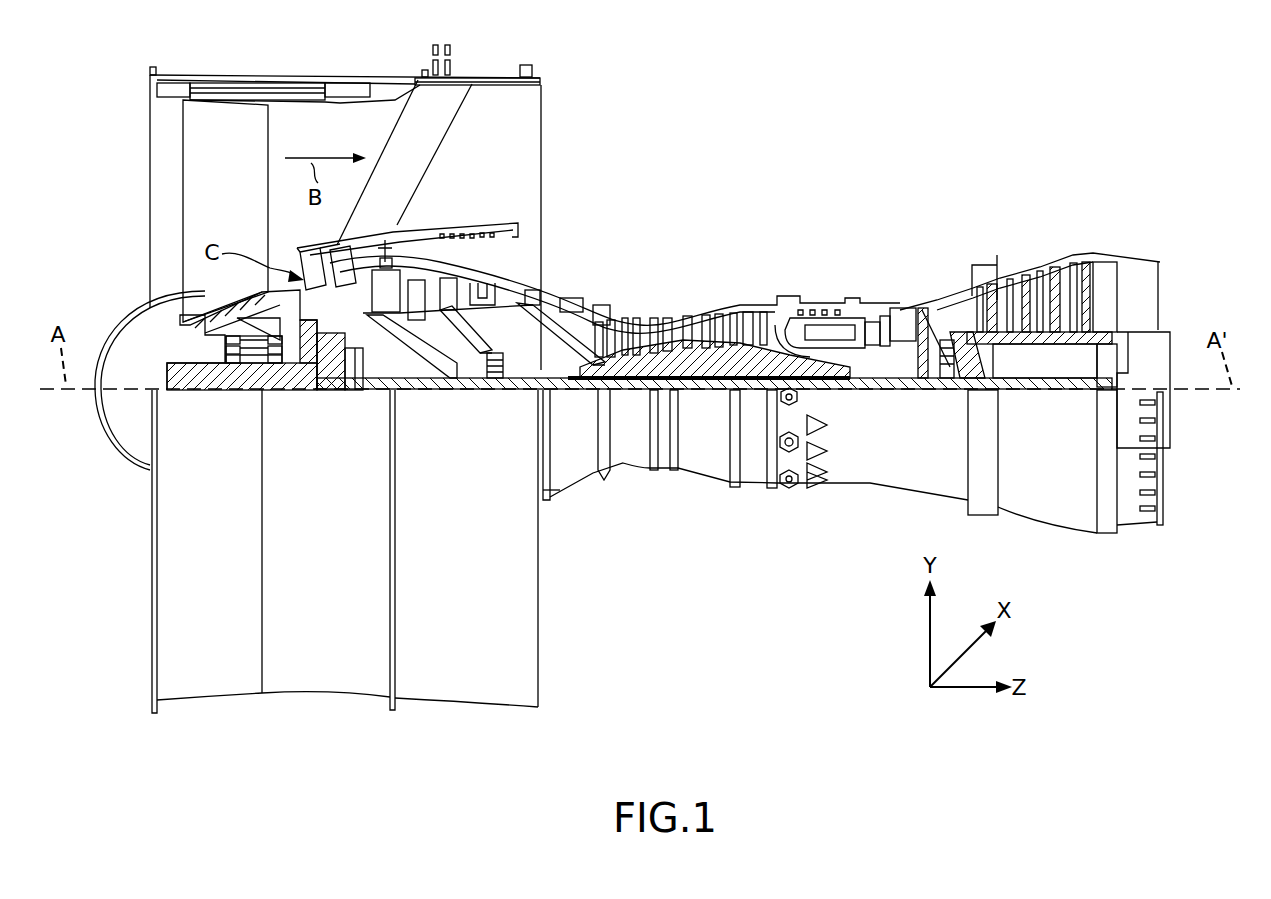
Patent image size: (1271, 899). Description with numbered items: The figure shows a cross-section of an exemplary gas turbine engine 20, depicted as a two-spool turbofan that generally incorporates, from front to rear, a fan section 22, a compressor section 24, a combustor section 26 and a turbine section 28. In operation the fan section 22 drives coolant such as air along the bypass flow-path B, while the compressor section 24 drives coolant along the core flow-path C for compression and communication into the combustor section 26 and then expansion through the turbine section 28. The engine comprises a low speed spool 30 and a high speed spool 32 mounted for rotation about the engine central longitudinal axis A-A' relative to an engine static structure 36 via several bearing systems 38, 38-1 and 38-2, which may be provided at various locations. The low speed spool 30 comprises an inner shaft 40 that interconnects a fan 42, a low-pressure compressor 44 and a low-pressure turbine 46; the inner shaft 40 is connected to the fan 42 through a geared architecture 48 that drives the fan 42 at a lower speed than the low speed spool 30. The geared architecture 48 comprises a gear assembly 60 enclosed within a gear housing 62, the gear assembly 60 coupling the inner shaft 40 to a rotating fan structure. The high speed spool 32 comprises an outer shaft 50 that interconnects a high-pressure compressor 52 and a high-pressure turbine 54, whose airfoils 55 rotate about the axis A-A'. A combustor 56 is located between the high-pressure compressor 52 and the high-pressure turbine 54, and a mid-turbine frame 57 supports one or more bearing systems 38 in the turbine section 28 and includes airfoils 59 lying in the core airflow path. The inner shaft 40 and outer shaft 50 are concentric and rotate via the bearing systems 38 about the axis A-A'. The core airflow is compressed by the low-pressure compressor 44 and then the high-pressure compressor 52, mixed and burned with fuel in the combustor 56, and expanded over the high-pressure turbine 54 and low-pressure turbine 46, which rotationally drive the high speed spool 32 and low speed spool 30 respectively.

The gas turbine engine 20 is at (885, 106).
The fan section 22 is at (145, 59).
The compressor section 24 is at (398, 189).
The combustor section 26 is at (780, 189).
The turbine section 28 is at (1103, 189).
The low speed spool 30 is at (712, 405).
The high speed spool 32 is at (748, 355).
The engine static structure 36 is at (322, 677).
The bearing system 38 is at (945, 378).
The bearing system 38-1 is at (237, 378).
The bearing system 38-2 is at (498, 378).
The inner shaft 40 is at (565, 395).
The fan 42 is at (210, 207).
The low-pressure compressor 44 is at (470, 287).
The low-pressure turbine 46 is at (1035, 273).
The geared architecture 48 is at (354, 418).
The outer shaft 50 is at (832, 375).
The high-pressure compressor 52 is at (690, 352).
The high-pressure turbine 54 is at (908, 312).
The airfoils 55 is at (885, 336).
The combustor 56 is at (825, 321).
The mid-turbine frame 57 is at (943, 316).
The airfoils 59 is at (958, 310).
The gear assembly 60 is at (360, 368).
The gear housing 62 is at (360, 345).